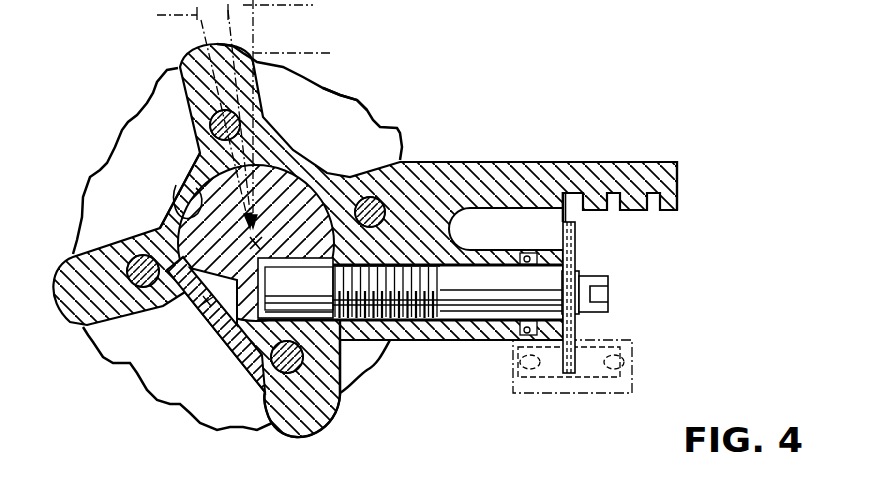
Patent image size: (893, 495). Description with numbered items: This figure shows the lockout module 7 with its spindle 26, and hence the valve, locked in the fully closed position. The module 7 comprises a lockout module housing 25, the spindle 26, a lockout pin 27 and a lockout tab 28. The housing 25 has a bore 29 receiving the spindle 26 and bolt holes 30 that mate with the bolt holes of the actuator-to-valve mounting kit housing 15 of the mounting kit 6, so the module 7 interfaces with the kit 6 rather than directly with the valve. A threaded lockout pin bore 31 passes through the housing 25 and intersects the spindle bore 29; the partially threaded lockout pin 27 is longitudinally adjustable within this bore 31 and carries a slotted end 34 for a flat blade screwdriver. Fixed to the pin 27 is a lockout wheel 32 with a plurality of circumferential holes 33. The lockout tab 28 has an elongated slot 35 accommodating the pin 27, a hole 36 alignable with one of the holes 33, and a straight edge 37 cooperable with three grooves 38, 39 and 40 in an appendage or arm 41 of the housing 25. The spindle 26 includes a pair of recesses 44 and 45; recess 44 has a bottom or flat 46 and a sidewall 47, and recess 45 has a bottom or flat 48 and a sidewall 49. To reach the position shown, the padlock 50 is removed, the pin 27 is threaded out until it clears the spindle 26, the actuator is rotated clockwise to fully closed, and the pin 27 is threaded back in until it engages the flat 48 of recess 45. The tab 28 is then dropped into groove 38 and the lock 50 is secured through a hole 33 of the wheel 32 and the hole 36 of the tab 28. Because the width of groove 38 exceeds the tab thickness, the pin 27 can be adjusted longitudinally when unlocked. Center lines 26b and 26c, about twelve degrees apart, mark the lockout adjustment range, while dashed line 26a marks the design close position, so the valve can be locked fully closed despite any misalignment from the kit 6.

The actuator-to-valve mounting kit 6 is at (128, 158).
The lockout module 7 is at (405, 112).
The actuator-to-valve mounting kit housing 15 is at (110, 203).
The lockout module housing 25 is at (428, 162).
The spindle 26 is at (400, 131).
The dashed line 26a is at (305, 114).
The center line 26b is at (305, 113).
The center line 26c is at (193, 117).
The lockout pin 27 is at (435, 341).
The lockout tab 28 is at (552, 226).
The bore 29 is at (183, 190).
The bolt holes 30 is at (268, 362).
The threaded lockout pin bore 31 is at (403, 343).
The lockout wheel 32 is at (578, 264).
The circumferential holes 33 is at (582, 348).
The slotted end 34 is at (610, 292).
The elongated hole or slot 35 is at (546, 272).
The hole 36 is at (568, 355).
The straight edge 37 is at (578, 197).
The groove 38 is at (608, 197).
The groove 39 is at (654, 196).
The groove 40 is at (679, 199).
The appendage or arm 41 is at (563, 161).
The recess 44 is at (192, 318).
The recess 45 is at (264, 238).
The bottom or flat 46 is at (158, 228).
The sidewall 47 is at (235, 345).
The bottom or flat 48 is at (240, 336).
The sidewall 49 is at (319, 271).
The padlock 50 is at (634, 388).